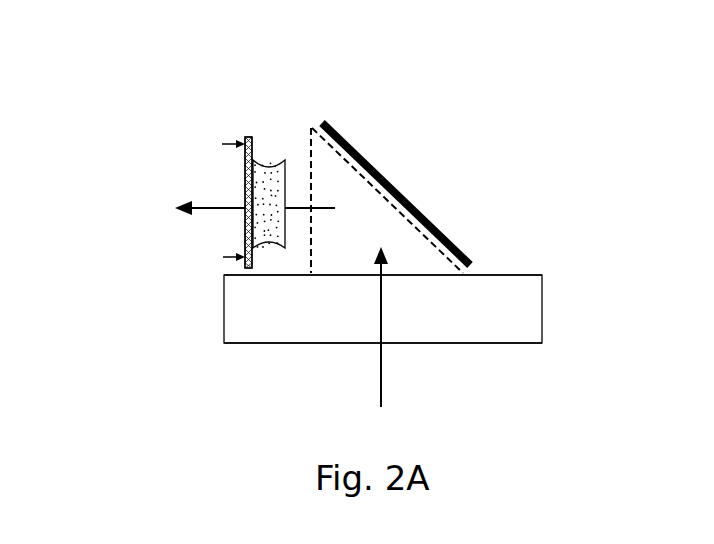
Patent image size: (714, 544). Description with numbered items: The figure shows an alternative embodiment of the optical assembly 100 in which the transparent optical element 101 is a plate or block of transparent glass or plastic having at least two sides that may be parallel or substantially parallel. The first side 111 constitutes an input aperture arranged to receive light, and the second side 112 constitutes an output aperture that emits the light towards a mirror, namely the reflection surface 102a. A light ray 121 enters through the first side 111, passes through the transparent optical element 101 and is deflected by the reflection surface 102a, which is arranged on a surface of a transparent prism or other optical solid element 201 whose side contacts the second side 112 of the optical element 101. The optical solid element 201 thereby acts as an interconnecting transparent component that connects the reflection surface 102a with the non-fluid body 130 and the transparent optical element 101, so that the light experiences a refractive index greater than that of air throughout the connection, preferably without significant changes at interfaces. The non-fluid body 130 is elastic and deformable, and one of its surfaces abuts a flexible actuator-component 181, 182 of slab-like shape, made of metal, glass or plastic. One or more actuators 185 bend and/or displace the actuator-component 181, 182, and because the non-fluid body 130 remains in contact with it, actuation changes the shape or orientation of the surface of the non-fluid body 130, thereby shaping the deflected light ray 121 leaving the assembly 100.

The optical assembly 100 is at (107, 56).
The transparent optical element 101 is at (233, 313).
The first side 111 is at (492, 352).
The second side 112 is at (502, 272).
The reflection surface 102a is at (352, 142).
The optical solid element 201 is at (317, 153).
The non-fluid body 130 is at (263, 175).
The actuator-component 181 is at (245, 179).
The actuator-component 182 is at (245, 179).
The actuators 185 is at (201, 203).
The light ray 121 is at (180, 215).